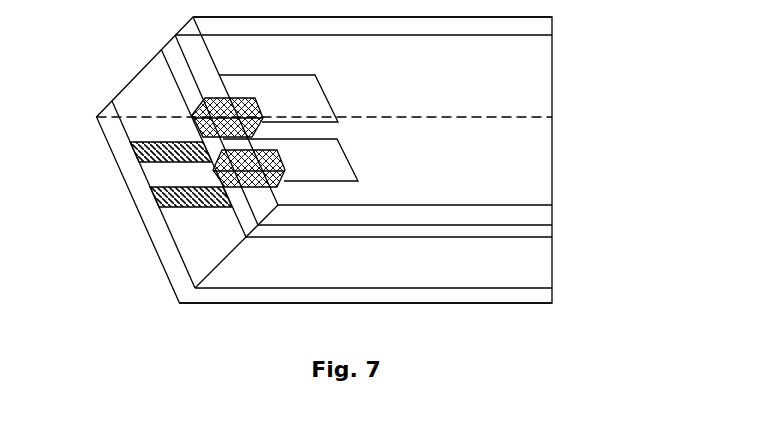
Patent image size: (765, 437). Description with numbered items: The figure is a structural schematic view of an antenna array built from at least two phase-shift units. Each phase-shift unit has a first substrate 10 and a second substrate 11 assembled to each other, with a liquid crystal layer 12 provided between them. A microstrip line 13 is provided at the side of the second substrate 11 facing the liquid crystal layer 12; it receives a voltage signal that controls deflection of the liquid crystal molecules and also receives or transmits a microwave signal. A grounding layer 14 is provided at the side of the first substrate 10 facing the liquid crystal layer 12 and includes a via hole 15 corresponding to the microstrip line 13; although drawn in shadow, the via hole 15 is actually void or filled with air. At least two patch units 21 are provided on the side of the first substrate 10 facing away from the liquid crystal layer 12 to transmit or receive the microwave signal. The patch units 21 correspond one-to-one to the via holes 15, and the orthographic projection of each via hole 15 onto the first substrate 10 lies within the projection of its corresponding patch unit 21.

The first substrate 10 is at (540, 28).
The second substrate 11 is at (533, 295).
The liquid crystal layer 12 is at (533, 268).
The microstrip line 13 is at (134, 151).
The grounding layer 14 is at (533, 232).
The via hole 15 is at (213, 173).
The patch unit 21 is at (337, 162).